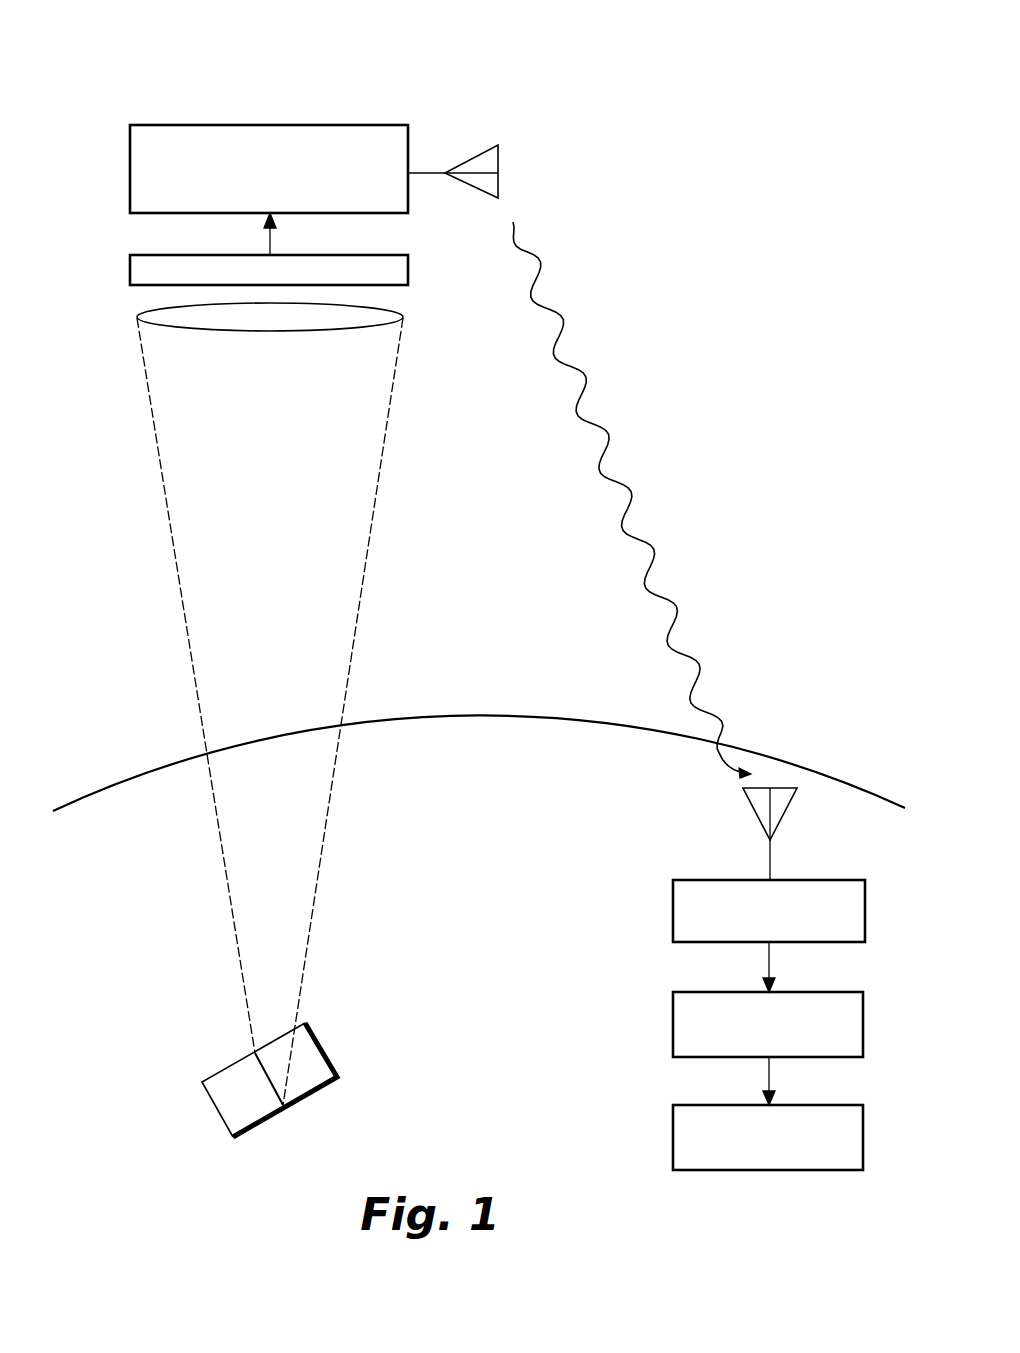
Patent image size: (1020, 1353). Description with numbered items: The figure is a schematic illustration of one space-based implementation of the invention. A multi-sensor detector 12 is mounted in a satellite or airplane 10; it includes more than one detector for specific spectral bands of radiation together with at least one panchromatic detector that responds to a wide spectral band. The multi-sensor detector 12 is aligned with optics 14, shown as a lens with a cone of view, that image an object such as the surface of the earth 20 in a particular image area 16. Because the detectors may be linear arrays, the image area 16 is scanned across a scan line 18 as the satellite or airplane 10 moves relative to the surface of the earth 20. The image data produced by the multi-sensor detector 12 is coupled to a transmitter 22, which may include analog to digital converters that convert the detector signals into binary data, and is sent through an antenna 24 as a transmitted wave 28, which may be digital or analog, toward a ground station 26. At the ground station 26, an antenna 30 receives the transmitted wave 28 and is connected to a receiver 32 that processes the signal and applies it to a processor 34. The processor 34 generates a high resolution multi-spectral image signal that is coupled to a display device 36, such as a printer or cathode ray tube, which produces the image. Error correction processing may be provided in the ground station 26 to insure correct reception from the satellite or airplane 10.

The satellite or airplane 10 is at (430, 58).
The multi-sensor detector 12 is at (410, 263).
The optics 14 is at (262, 322).
The image area 16 is at (235, 1072).
The scan line 18 is at (272, 1087).
The surface of the earth 20 is at (828, 778).
The transmitter 22 is at (213, 125).
The antenna 24 is at (498, 180).
The ground station 26 is at (600, 1041).
The transmitted wave 28 is at (570, 352).
The antenna 30 is at (745, 808).
The receiver 32 is at (673, 895).
The processor 34 is at (676, 992).
The display device 36 is at (738, 1170).